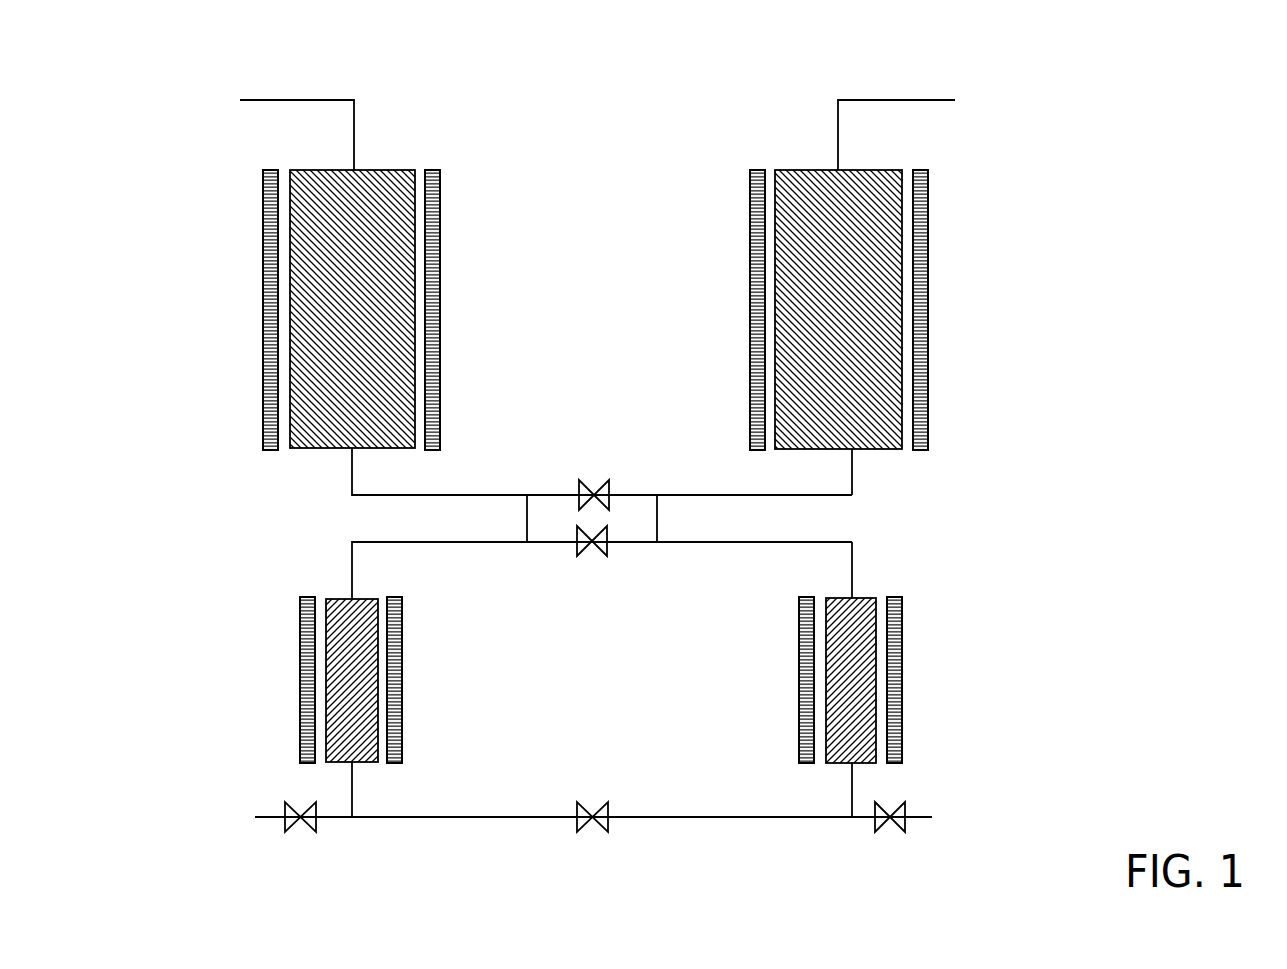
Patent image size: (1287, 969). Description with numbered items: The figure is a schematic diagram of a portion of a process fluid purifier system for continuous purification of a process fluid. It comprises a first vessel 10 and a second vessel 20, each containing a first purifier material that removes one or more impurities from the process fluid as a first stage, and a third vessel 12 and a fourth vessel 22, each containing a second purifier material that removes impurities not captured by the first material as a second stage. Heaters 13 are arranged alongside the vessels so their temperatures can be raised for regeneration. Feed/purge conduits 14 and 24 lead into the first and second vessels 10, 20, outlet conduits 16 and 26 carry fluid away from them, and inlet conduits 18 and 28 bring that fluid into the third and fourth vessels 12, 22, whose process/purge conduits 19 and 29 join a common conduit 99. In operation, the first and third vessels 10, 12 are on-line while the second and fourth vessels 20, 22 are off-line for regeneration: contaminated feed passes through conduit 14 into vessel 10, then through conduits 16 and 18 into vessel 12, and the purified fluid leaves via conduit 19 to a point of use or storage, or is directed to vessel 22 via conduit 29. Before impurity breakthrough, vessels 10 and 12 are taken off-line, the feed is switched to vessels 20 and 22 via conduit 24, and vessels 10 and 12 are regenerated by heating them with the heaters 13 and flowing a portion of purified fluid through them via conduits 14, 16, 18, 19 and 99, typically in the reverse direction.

The first vessel 10 is at (377, 170).
The third vessel 12 is at (374, 660).
The heaters 13 is at (300, 622).
The feed/purge conduit 14 is at (293, 100).
The outlet conduit 16 is at (348, 470).
The inlet conduit 18 is at (352, 565).
The process/purge conduit 19 is at (352, 782).
The second vessel 20 is at (827, 170).
The fourth vessel 22 is at (827, 660).
The feed/purge conduit 24 is at (893, 100).
The outlet conduit 26 is at (852, 470).
The inlet conduit 28 is at (852, 560).
The process/purge conduit 29 is at (852, 785).
The conduit 99 is at (693, 822).